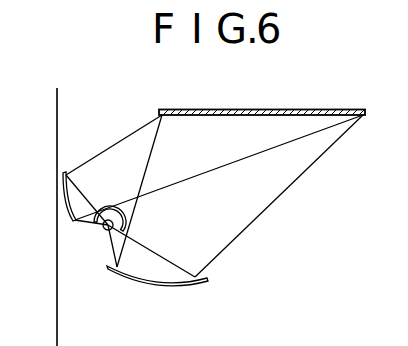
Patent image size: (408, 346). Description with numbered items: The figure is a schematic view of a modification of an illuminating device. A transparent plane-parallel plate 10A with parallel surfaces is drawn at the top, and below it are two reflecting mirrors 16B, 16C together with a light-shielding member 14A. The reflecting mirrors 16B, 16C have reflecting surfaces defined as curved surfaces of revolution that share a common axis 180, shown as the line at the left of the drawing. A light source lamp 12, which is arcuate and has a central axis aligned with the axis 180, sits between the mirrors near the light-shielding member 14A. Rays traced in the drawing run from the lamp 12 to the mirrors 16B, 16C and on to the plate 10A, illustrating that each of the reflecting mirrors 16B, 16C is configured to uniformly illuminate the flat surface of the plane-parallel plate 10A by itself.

The transparent plane-parallel plate 10A is at (296, 95).
The light source lamp 12 is at (105, 232).
The light-shielding member 14A is at (127, 213).
The reflecting mirror 16B is at (163, 285).
The reflecting mirror 16C is at (70, 223).
The common axis 180 is at (57, 293).